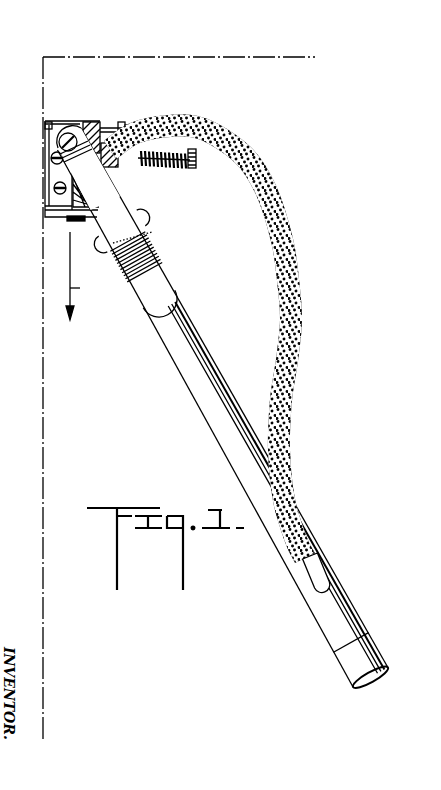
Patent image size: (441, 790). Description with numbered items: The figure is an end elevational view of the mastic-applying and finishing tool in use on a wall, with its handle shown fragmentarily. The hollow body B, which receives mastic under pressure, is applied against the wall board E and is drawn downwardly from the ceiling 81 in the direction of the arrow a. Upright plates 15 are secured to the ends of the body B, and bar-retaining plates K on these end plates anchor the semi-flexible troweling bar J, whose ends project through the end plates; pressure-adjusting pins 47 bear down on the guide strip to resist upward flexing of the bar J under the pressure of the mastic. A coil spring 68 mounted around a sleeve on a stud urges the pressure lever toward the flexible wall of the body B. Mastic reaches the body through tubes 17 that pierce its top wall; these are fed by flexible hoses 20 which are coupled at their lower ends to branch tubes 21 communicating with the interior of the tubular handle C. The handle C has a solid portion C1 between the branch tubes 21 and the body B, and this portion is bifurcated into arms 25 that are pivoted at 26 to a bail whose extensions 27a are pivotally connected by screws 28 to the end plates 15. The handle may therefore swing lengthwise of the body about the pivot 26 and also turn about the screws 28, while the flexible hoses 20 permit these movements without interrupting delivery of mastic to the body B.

The upright plates 15 is at (61, 124).
The hollow body B is at (80, 120).
The troweling bar J is at (46, 126).
The bar-retaining plates K is at (55, 178).
The screws 28 is at (78, 123).
The pressure-adjusting pins 47 is at (126, 124).
The tubes 17 is at (105, 166).
The coil spring 68 is at (182, 168).
The extensions 27a is at (120, 208).
The pivot 26 is at (146, 219).
The arms 25 is at (170, 278).
The flexible hoses 20 is at (301, 320).
The branch tubes 21 is at (313, 577).
The tubular handle C is at (378, 673).
The solid portion C1 is at (207, 388).
The arrow a is at (81, 276).
The wall board E is at (43, 410).
The ceiling 81 is at (277, 63).